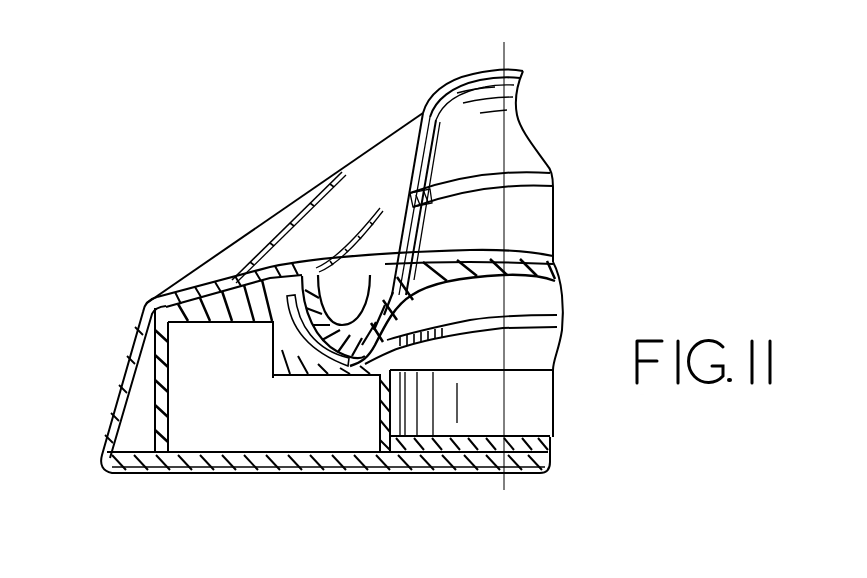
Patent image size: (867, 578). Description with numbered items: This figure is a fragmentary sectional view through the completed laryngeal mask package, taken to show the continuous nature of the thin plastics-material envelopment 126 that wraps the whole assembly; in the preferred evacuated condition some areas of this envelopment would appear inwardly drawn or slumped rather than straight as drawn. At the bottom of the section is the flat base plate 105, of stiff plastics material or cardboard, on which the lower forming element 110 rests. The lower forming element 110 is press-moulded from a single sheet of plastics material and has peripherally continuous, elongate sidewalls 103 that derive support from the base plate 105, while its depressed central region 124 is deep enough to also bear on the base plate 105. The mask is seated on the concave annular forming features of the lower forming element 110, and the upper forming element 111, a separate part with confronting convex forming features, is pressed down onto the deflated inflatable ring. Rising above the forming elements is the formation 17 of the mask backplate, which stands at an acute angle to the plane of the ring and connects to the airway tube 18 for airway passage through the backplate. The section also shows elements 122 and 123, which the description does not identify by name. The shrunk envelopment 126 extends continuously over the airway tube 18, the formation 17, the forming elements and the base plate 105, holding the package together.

The airway tube 18 is at (497, 153).
The formation 17 is at (550, 274).
The thin plastics-material envelopment 126 is at (307, 220).
The upper forming element 111 is at (293, 270).
The lower forming element 110 is at (208, 288).
The elongate sidewalls 103 is at (153, 439).
The cup lip 122 is at (281, 335).
The wall 123 is at (341, 377).
The base plate 105 is at (280, 461).
The depressed central region 124 is at (437, 444).